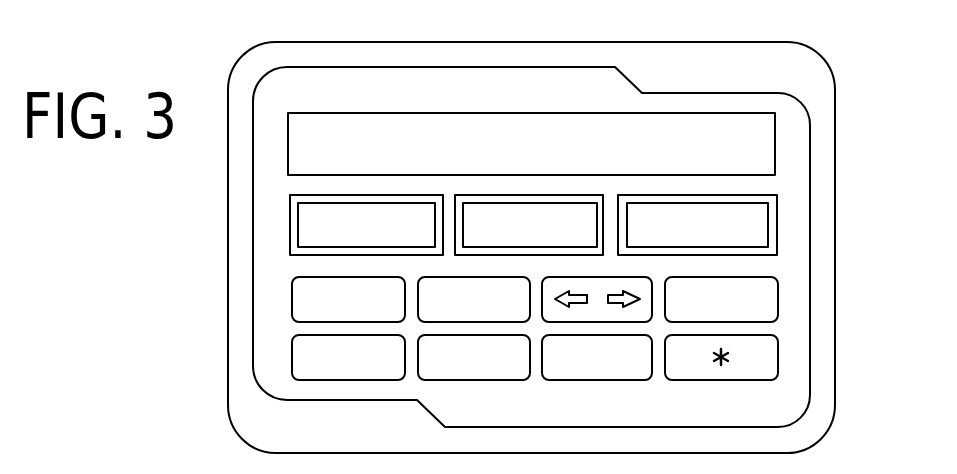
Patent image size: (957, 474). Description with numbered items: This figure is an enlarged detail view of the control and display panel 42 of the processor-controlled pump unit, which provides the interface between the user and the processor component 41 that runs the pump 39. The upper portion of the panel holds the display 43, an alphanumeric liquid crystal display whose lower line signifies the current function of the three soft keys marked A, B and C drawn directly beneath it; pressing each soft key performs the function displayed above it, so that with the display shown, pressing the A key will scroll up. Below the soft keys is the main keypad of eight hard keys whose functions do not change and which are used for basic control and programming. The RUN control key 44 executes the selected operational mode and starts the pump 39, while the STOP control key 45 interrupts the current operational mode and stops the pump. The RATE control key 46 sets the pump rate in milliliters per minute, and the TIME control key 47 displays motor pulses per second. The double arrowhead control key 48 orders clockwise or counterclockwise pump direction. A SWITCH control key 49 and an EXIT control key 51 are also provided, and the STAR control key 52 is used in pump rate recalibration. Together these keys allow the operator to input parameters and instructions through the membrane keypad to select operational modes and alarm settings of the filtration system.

The pump 39 is at (430, 0).
The processor component 41 is at (543, 42).
The control and display panel 42 is at (812, 152).
The display 43 is at (780, 133).
The RUN control key 44 is at (298, 311).
The STOP control key 45 is at (298, 362).
The RATE control key 46 is at (528, 300).
The TIME control key 47 is at (491, 375).
The double arrowhead control key 48 is at (650, 300).
The SWITCH control key 49 is at (617, 376).
The EXIT control key 51 is at (775, 300).
The STAR (*) control key 52 is at (740, 372).